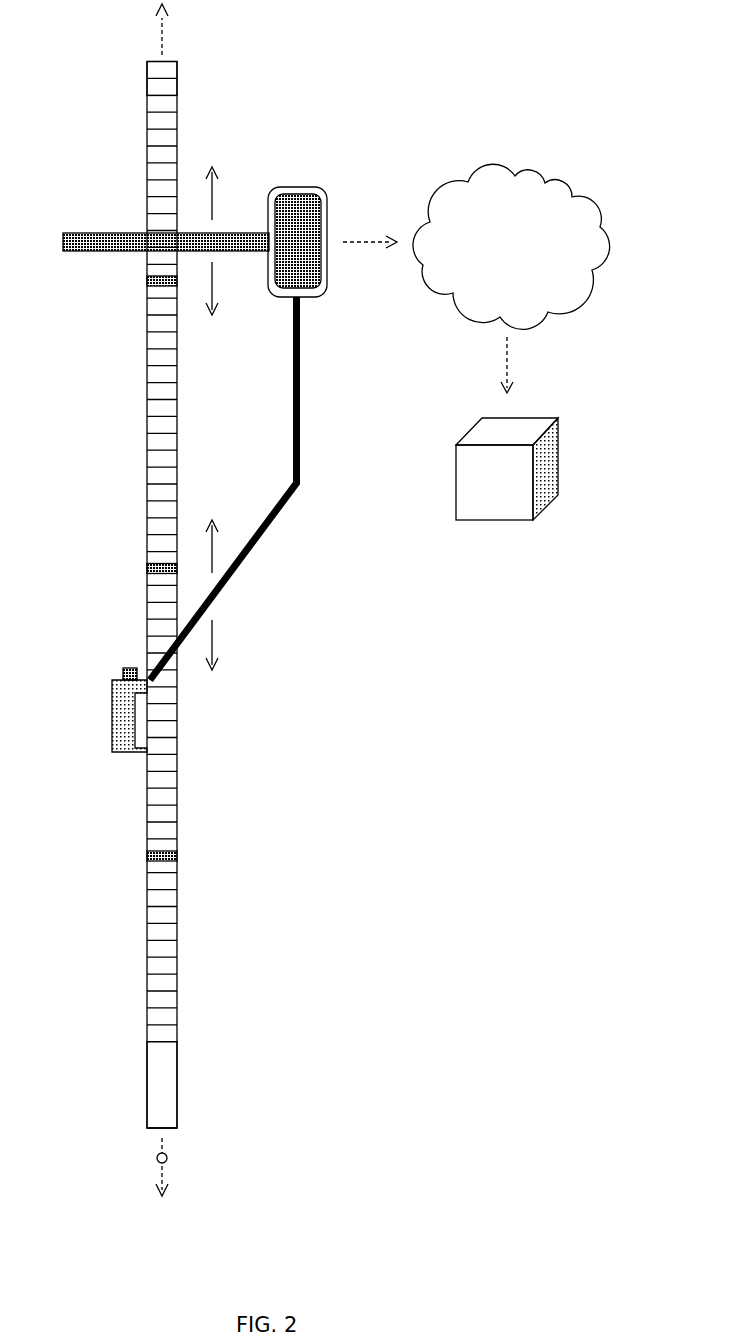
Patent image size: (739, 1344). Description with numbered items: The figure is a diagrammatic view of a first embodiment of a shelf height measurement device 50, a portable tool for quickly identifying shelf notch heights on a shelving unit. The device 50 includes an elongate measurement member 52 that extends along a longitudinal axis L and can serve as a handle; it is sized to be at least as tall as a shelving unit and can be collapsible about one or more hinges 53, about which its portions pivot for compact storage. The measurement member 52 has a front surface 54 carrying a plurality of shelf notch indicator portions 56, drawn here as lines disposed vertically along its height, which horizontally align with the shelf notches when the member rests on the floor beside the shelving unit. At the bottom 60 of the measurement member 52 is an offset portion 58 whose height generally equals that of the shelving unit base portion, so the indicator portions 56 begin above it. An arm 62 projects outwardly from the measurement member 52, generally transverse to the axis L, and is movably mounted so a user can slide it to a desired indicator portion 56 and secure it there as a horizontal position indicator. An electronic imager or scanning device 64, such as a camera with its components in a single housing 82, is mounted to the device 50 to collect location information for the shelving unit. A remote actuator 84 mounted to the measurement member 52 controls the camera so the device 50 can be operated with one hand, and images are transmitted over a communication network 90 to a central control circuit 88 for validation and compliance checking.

The shelf height measurement device 50 is at (386, 106).
The elongate measurement member 52 is at (147, 443).
The hinges 53 is at (160, 285).
The front surface 54 is at (168, 88).
The shelf notch indicator portions 56 is at (157, 152).
The offset portion 58 is at (192, 1077).
The bottom 60 is at (158, 1115).
The arm portion 62 is at (238, 233).
The electronic imager or scanning device 64 is at (322, 188).
The housing 82 is at (322, 292).
The remote actuator 84 is at (112, 730).
The central control circuit 88 is at (500, 520).
The communication network 90 is at (541, 190).
The longitudinal axis L is at (168, 1158).